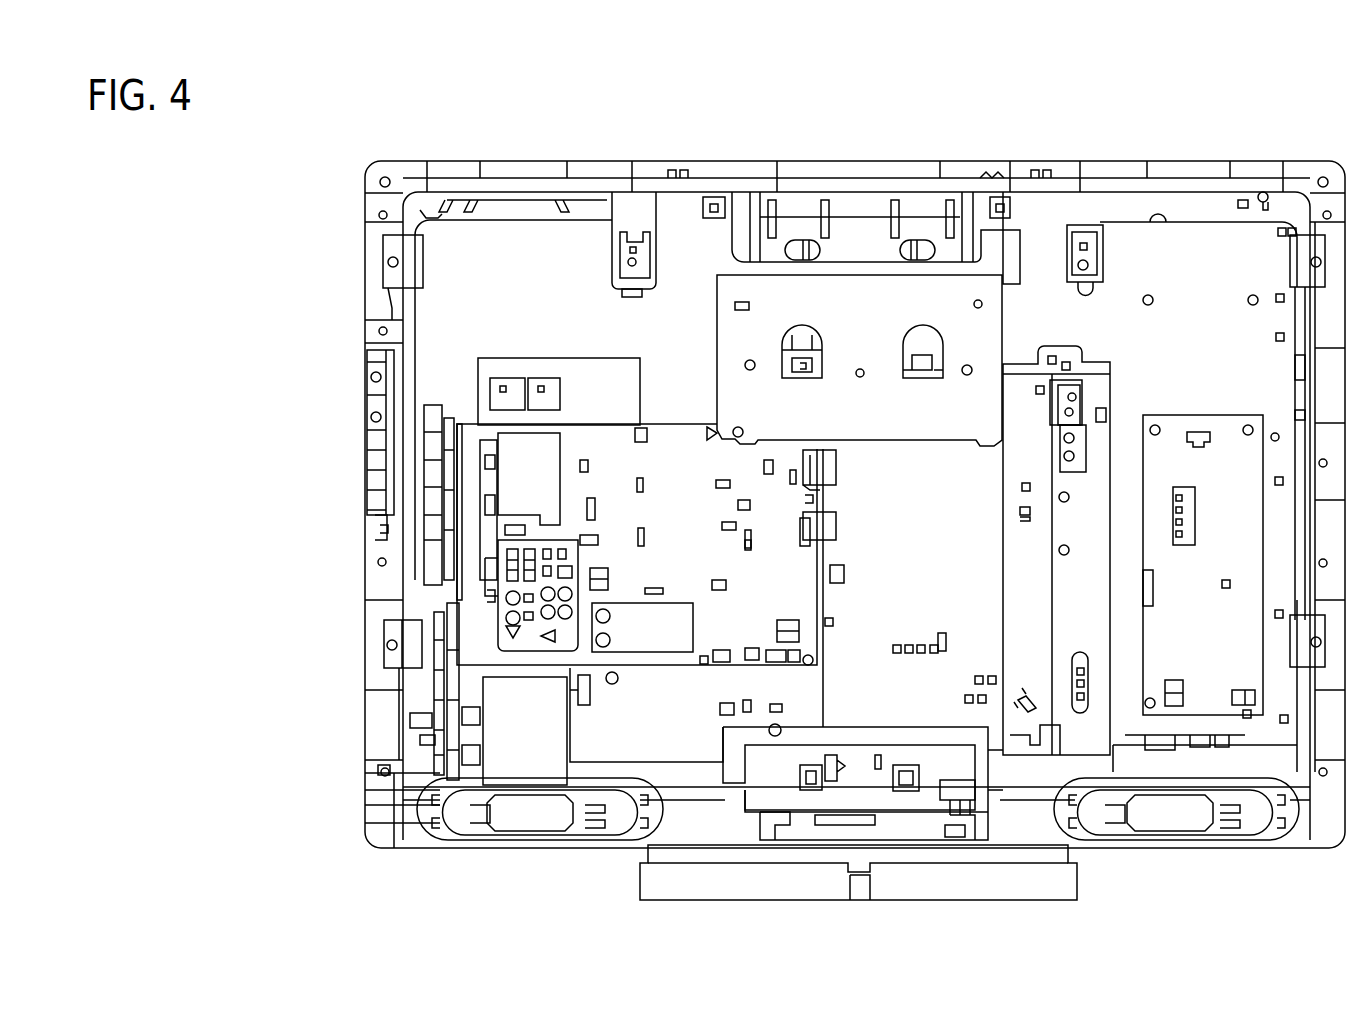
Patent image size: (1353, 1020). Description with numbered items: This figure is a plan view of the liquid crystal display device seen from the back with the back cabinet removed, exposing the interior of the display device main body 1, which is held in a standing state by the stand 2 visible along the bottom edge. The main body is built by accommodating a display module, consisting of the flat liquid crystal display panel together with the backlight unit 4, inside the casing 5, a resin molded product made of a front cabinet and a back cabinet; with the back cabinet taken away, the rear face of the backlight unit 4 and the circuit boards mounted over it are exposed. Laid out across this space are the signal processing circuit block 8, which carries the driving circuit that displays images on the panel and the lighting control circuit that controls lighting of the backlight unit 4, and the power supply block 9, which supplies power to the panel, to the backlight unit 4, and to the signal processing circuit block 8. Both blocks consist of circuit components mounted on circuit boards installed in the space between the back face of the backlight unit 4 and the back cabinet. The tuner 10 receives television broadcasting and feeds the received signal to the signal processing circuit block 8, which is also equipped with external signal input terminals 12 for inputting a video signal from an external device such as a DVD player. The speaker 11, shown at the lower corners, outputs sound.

The display device main body 1 is at (457, 155).
The stand 2 is at (990, 878).
The backlight unit 4 is at (1187, 242).
The casing 5 is at (603, 160).
The signal processing circuit block 8 is at (661, 445).
The power supply block 9 is at (1024, 400).
The tuner 10 is at (645, 635).
The speaker 11 is at (476, 828).
The external signal input terminals 12 is at (494, 587).